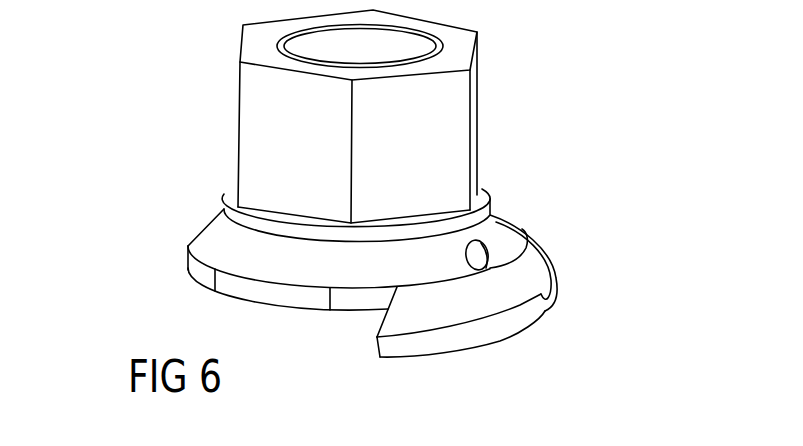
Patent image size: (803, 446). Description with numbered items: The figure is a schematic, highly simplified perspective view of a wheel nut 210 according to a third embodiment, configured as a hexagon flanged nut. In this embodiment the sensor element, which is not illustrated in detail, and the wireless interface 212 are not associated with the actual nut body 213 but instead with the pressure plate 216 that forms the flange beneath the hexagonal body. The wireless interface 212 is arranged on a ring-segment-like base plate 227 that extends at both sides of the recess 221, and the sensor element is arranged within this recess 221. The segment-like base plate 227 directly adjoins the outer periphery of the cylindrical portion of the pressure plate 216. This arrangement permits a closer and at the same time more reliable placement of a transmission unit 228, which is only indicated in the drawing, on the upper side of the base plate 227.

The wheel nut 210 is at (374, 183).
The nut body 213 is at (447, 115).
The pressure plate 216 is at (155, 237).
The wireless interface 212 is at (560, 242).
The recess 221 is at (476, 262).
The transmission unit 228 is at (513, 285).
The base plate 227 is at (503, 329).